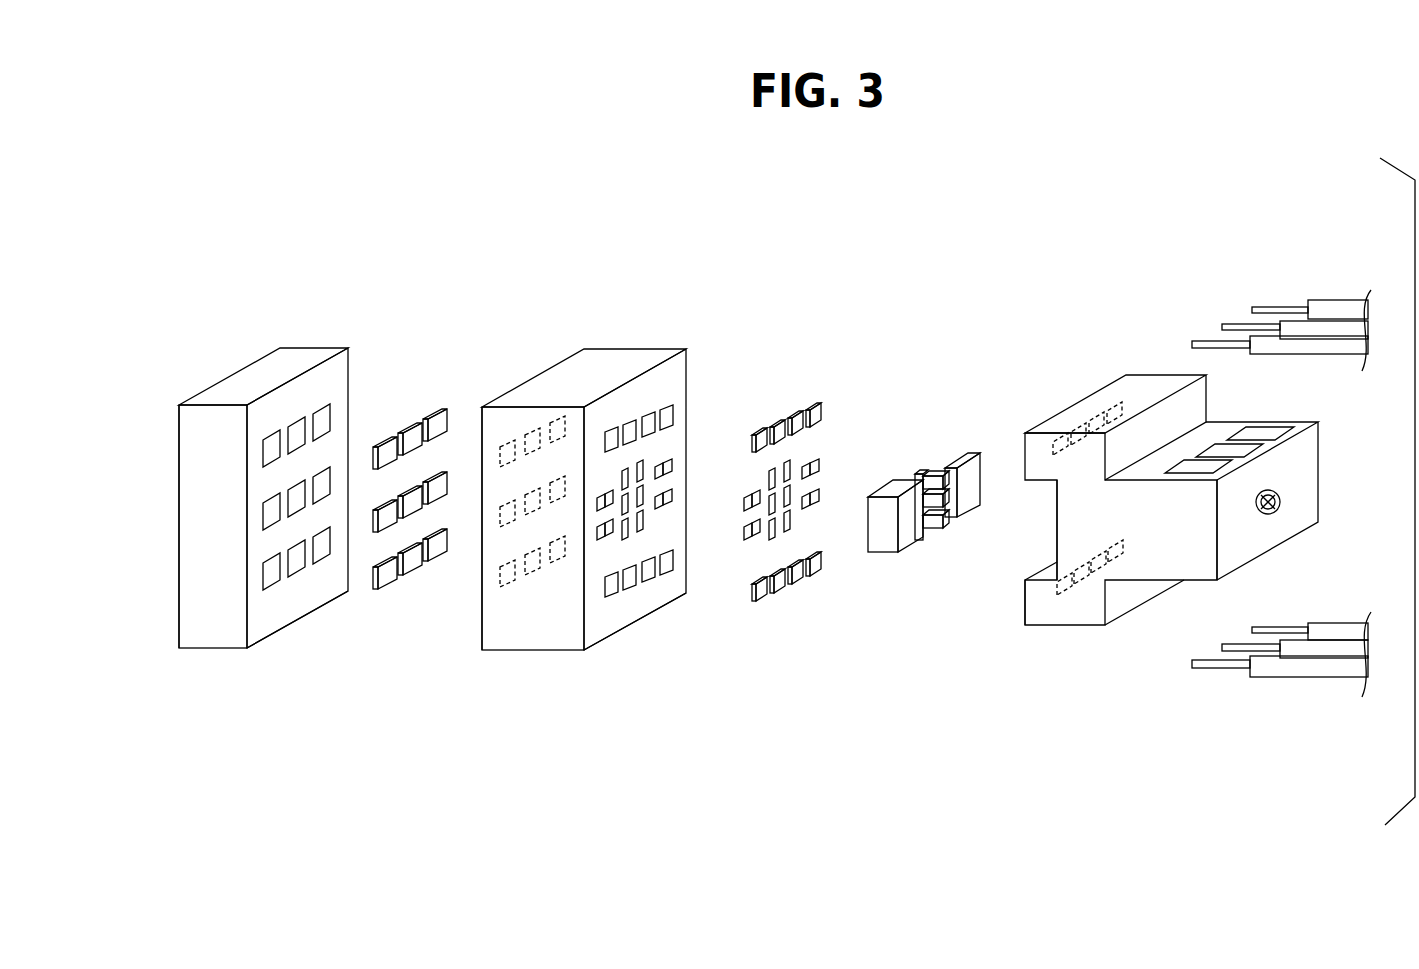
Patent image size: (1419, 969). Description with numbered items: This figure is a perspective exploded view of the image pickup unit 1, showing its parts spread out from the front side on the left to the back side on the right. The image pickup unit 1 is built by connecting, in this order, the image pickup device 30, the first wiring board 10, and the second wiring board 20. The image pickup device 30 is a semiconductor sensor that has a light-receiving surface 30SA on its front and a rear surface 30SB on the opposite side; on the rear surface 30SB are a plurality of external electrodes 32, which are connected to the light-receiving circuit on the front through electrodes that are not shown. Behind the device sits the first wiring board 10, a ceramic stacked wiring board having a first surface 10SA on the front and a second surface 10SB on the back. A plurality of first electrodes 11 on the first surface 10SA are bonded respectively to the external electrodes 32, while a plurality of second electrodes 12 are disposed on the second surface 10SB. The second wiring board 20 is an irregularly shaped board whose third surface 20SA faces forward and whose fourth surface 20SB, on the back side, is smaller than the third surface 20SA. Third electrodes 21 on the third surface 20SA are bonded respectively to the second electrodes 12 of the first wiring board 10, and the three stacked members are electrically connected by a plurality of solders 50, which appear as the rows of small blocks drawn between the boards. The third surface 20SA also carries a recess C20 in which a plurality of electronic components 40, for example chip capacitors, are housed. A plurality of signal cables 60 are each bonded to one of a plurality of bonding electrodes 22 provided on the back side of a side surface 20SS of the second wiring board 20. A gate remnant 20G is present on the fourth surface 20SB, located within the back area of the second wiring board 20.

The image pickup unit 1 is at (230, 228).
The image pickup device 30 is at (313, 346).
The external electrodes 32 is at (320, 560).
The light-receiving surface 30SA is at (170, 613).
The rear surface 30SB is at (266, 614).
The solders 50 is at (410, 425).
The first wiring board 10 is at (628, 349).
The first electrodes 11 is at (493, 582).
The second electrodes 12 is at (627, 582).
The first surface 10SA is at (472, 613).
The second surface 10SB is at (612, 615).
The electronic components 40 is at (895, 482).
The second wiring board 20 is at (1160, 374).
The third electrodes 21 is at (1052, 587).
The bonding electrodes 22 is at (1269, 422).
The recess C20 is at (1028, 522).
The gate remnant 20G is at (1281, 498).
The third surface 20SA is at (1014, 612).
The fourth surface 20SB is at (1306, 517).
The side surface 20SS is at (1150, 590).
The signal cables 60 is at (1325, 299).